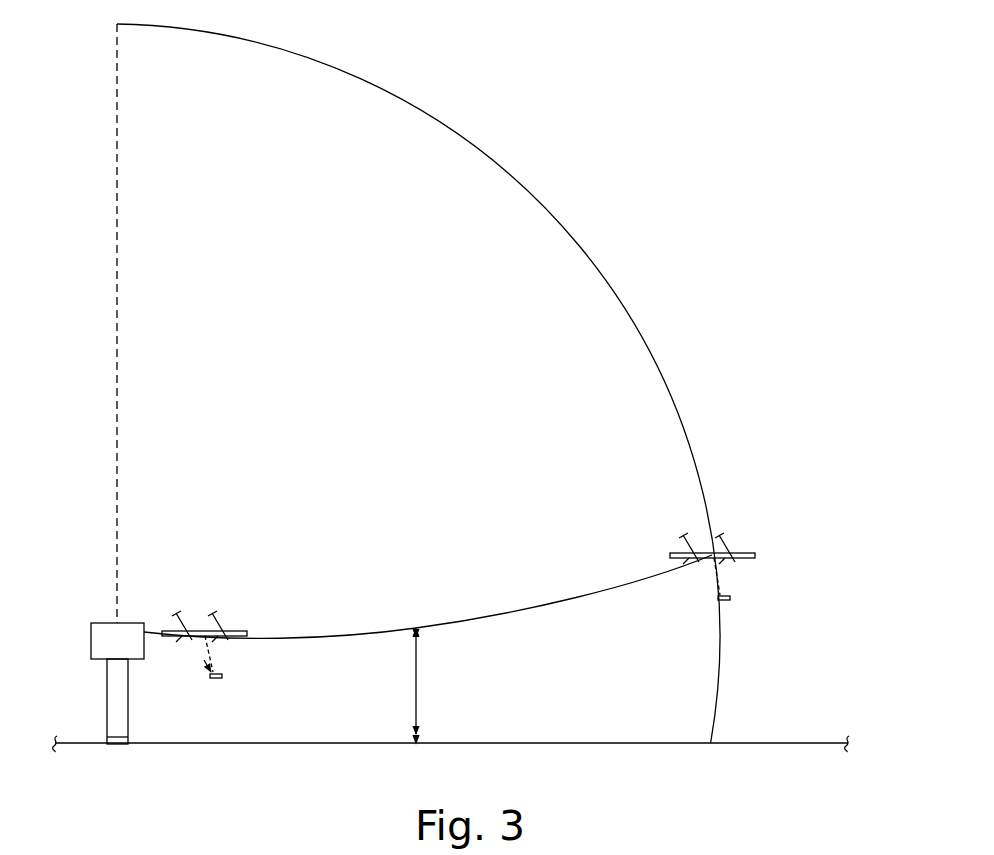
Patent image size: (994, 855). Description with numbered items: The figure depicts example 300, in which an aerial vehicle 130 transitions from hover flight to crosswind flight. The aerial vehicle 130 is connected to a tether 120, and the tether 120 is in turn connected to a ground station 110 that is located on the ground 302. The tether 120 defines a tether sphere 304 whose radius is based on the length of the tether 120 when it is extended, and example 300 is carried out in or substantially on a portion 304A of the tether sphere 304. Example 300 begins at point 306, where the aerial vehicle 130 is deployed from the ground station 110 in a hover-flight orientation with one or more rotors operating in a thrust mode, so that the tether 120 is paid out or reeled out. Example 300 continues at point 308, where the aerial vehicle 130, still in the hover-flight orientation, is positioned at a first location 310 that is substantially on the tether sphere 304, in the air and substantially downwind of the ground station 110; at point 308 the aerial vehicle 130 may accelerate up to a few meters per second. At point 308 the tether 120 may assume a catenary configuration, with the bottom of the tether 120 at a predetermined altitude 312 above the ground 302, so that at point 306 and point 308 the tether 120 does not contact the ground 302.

The example 300 is at (681, 129).
The tether sphere 304 is at (679, 405).
The portion of the tether sphere 304A is at (665, 721).
The ground 302 is at (762, 743).
The ground station 110 is at (107, 707).
The tether 120 is at (566, 600).
The point 306 is at (226, 586).
The point 308 is at (758, 517).
The first location 310 is at (719, 560).
The aerial vehicle 130 is at (222, 638).
The predetermined altitude 312 is at (419, 677).